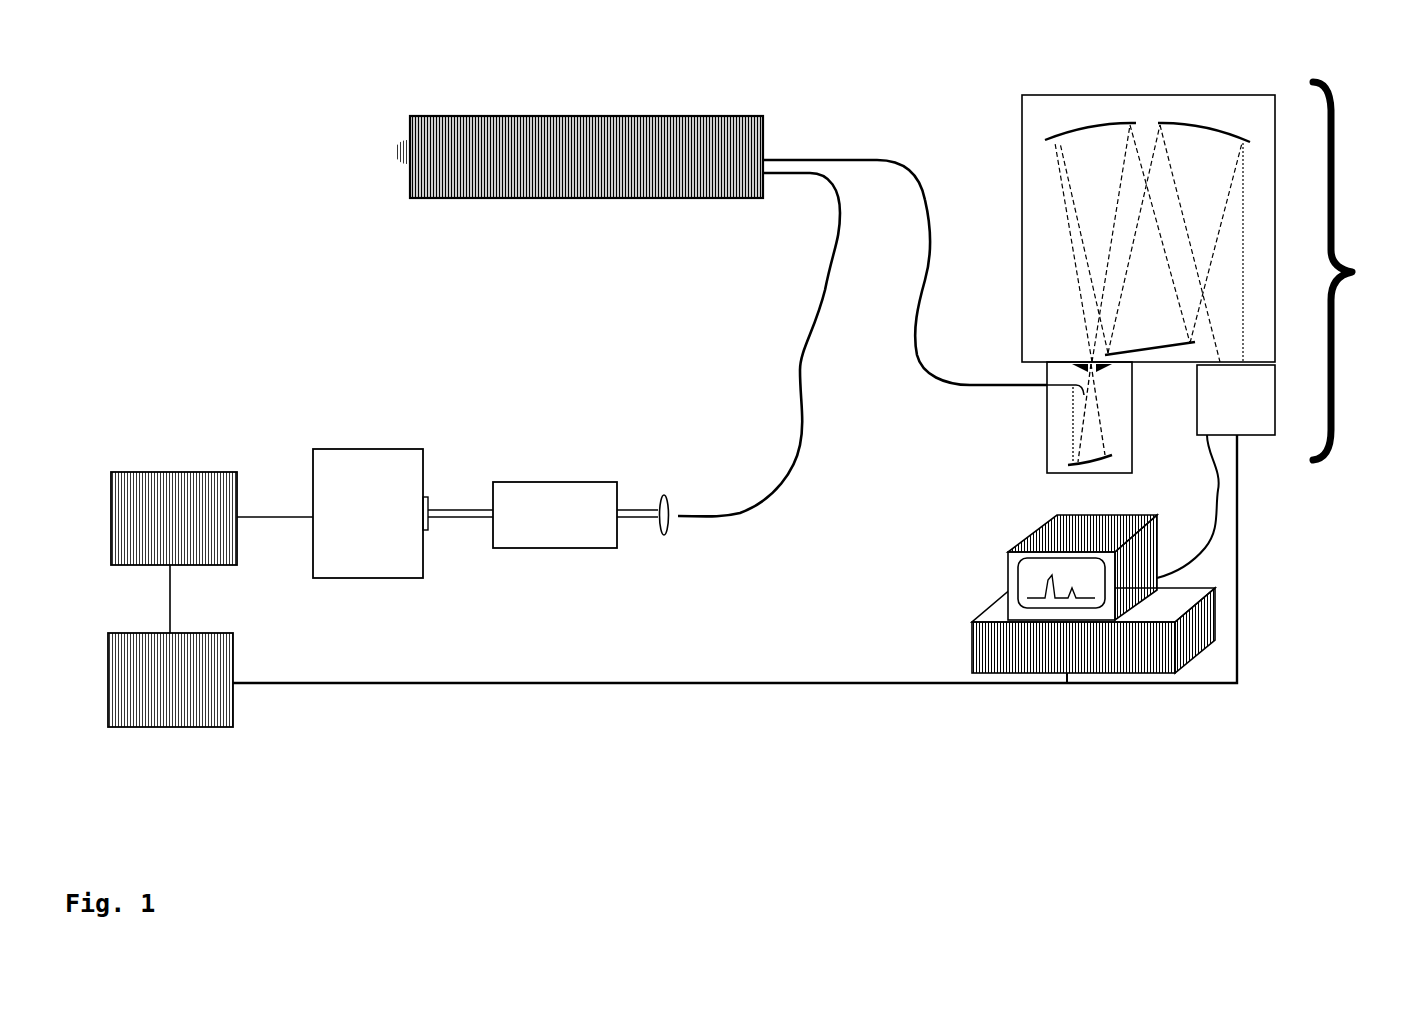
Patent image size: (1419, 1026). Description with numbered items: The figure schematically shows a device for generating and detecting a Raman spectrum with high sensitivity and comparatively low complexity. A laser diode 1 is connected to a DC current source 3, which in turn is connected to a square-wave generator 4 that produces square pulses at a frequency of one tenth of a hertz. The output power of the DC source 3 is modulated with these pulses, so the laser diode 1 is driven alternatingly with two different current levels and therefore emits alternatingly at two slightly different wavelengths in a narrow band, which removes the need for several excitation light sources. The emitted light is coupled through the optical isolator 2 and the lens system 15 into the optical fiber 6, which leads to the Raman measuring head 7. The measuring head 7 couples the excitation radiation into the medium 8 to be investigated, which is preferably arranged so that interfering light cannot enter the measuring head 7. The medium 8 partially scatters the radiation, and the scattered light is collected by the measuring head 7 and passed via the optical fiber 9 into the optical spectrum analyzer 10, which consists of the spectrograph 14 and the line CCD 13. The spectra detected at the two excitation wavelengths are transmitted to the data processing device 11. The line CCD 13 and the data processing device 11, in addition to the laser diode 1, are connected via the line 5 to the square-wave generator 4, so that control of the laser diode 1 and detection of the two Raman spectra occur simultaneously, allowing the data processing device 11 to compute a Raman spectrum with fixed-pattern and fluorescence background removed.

The laser diode 1 is at (366, 436).
The optical isolator 2 is at (549, 474).
The DC current source 3 is at (166, 462).
The square-wave generator 4 is at (246, 714).
The line 5 is at (703, 698).
The optical fiber 6 is at (820, 458).
The Raman measuring head 7 is at (558, 208).
The medium to be investigated 8 is at (352, 170).
The optical fiber 9 is at (875, 142).
The optical spectrum analyzer 10 is at (1225, 277).
The data processing device 11 is at (976, 598).
The line CCD 13 is at (1196, 426).
The spectrograph 14 is at (1060, 86).
The lens system 15 is at (678, 545).